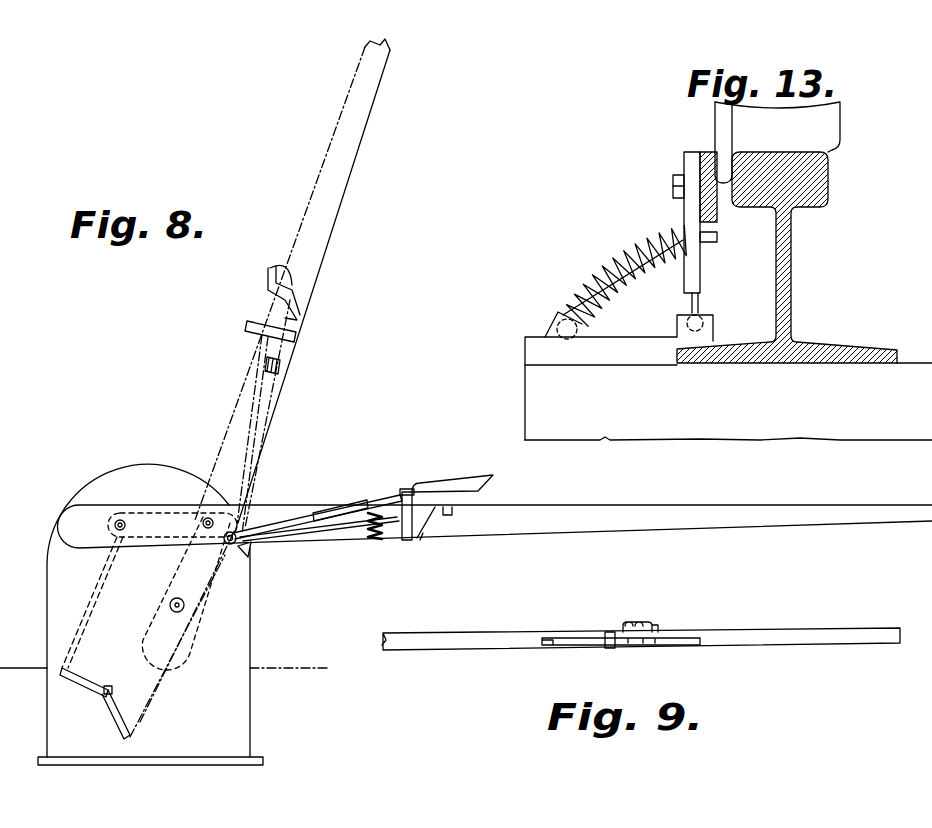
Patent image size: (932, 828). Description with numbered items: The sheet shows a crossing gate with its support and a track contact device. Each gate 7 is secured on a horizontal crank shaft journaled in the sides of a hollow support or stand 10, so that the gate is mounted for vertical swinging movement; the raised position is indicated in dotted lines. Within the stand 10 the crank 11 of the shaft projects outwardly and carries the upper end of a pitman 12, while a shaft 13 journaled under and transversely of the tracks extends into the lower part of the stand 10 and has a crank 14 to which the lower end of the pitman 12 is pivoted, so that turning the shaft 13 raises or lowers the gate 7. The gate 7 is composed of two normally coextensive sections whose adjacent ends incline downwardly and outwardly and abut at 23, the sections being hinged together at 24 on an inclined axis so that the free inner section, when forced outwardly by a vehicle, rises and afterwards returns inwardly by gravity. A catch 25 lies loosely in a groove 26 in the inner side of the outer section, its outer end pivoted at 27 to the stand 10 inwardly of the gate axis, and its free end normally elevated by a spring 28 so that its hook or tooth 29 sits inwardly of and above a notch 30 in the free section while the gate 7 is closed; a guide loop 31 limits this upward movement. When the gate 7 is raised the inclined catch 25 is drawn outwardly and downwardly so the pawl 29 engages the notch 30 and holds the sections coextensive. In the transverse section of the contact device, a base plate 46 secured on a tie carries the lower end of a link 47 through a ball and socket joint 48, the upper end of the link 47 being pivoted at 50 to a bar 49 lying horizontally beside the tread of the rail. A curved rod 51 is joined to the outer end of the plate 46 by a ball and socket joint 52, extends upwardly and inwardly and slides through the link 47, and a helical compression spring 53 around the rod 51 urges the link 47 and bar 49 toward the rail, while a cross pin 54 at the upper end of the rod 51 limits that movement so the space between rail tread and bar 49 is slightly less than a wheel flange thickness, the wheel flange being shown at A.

In FIG. 8, the gate 7 is at (313, 214).
In FIG. 9, the gate 7 is at (505, 633).
In FIG. 8, the hollow support or stand 10 is at (165, 614).
In FIG. 8, the crank 11 is at (160, 513).
In FIG. 8, the pitman 12 is at (92, 597).
In FIG. 8, the shaft 13 is at (108, 686).
In FIG. 8, the crank 14 is at (86, 692).
In FIG. 8, the abutting ends of gate sections 23 is at (427, 530).
In FIG. 9, the hinge 24 is at (647, 623).
In FIG. 8, the catch 25 is at (248, 400).
In FIG. 9, the catch 25 is at (572, 646).
In FIG. 8, the groove 26 is at (335, 530).
In FIG. 8, the pivot 27 is at (250, 548).
In FIG. 8, the spring 28 is at (382, 541).
In FIG. 8, the hook or tooth (pawl) 29 is at (493, 478).
In FIG. 8, the notch 30 is at (455, 512).
In FIG. 8, the guide loop 31 is at (414, 502).
In FIG. 9, the guide loop 31 is at (610, 648).
In FIG. 13, the base plate 46 is at (535, 352).
In FIG. 13, the link 47 is at (690, 272).
In FIG. 13, the ball and socket joint 48 is at (703, 316).
In FIG. 13, the bar 49 is at (717, 220).
In FIG. 13, the pivot 50 is at (673, 187).
In FIG. 13, the curved rod 51 is at (627, 275).
In FIG. 13, the ball and socket joint 52 is at (550, 320).
In FIG. 13, the helical compression spring 53 is at (580, 280).
In FIG. 13, the cross pin 54 is at (717, 240).
In FIG. 13, the wheel A is at (833, 120).